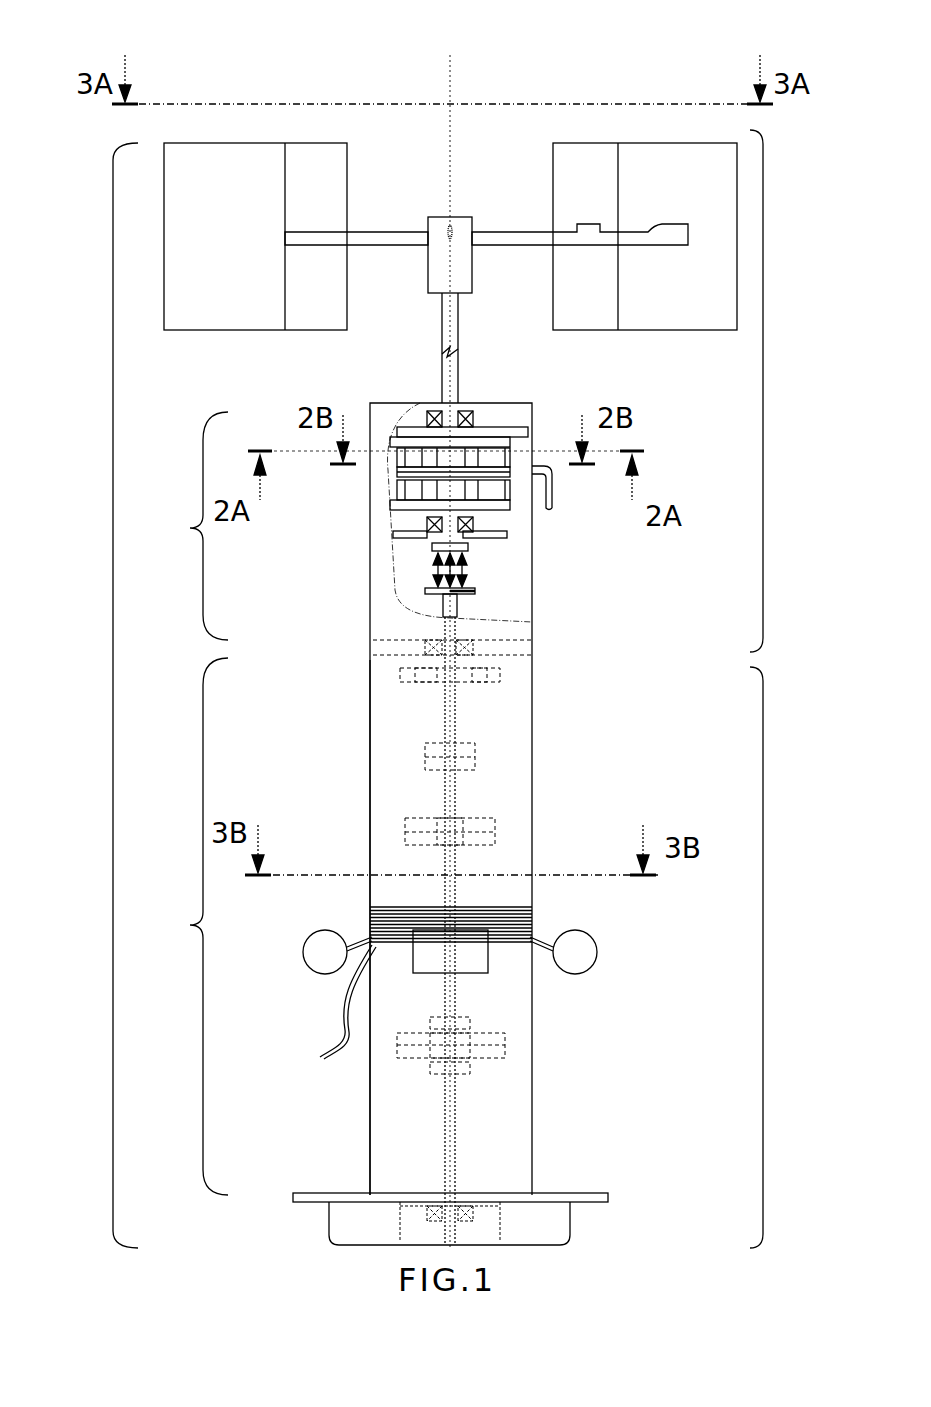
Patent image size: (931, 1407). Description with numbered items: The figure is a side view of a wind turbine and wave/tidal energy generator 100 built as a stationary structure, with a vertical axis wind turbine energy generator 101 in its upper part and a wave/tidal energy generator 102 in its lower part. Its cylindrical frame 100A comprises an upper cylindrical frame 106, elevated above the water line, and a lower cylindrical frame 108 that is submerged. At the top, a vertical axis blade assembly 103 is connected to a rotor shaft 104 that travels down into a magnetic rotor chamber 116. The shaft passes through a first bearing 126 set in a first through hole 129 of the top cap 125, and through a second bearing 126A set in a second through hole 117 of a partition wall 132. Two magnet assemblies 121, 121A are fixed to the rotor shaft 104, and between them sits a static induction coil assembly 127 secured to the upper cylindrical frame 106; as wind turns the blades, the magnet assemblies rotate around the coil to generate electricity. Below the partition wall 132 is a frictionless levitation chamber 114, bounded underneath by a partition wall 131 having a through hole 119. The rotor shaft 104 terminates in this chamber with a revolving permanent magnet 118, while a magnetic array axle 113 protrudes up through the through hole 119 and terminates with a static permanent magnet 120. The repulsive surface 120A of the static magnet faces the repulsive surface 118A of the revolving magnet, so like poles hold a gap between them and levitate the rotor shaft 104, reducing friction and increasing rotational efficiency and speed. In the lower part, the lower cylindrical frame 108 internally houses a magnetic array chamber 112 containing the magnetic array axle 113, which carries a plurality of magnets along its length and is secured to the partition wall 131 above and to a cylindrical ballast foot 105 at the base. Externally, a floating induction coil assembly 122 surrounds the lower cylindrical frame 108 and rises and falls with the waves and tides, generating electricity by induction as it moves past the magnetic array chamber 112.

The wind turbine and wave/tidal energy generator 100 is at (113, 697).
The cylindrical frame 100A is at (360, 748).
The vertical axis wind turbine energy generator 101 is at (763, 390).
The wave/tidal energy generator 102 is at (763, 935).
The vertical axis blade assembly 103 is at (492, 214).
The rotor shaft 104 is at (455, 352).
The cylindrical ballast foot 105 is at (508, 1217).
The upper cylindrical frame 106 is at (190, 528).
The lower cylindrical frame 108 is at (190, 925).
The magnetic array chamber 112 is at (497, 768).
The magnetic array axle 113 is at (455, 715).
The frictionless levitation chamber 114 is at (514, 565).
The magnetic rotor chamber 116 is at (522, 488).
The second through hole 117 is at (507, 538).
The revolving permanent magnet 118 is at (433, 550).
The repulsive surface 118A is at (437, 556).
The through hole 119 is at (428, 650).
The static permanent magnet 120 is at (533, 604).
The repulsive surface 120A is at (463, 590).
The magnet assembly 121 is at (402, 455).
The magnet assembly 121A is at (400, 493).
The floating induction coil assembly 122 is at (560, 920).
The top cap 125 is at (520, 417).
The first bearing 126 is at (475, 413).
The second bearing 126A is at (428, 522).
The static induction coil assembly 127 is at (400, 472).
The first through hole 129 is at (433, 410).
The partition wall 131 is at (508, 647).
The partition wall 132 is at (510, 522).